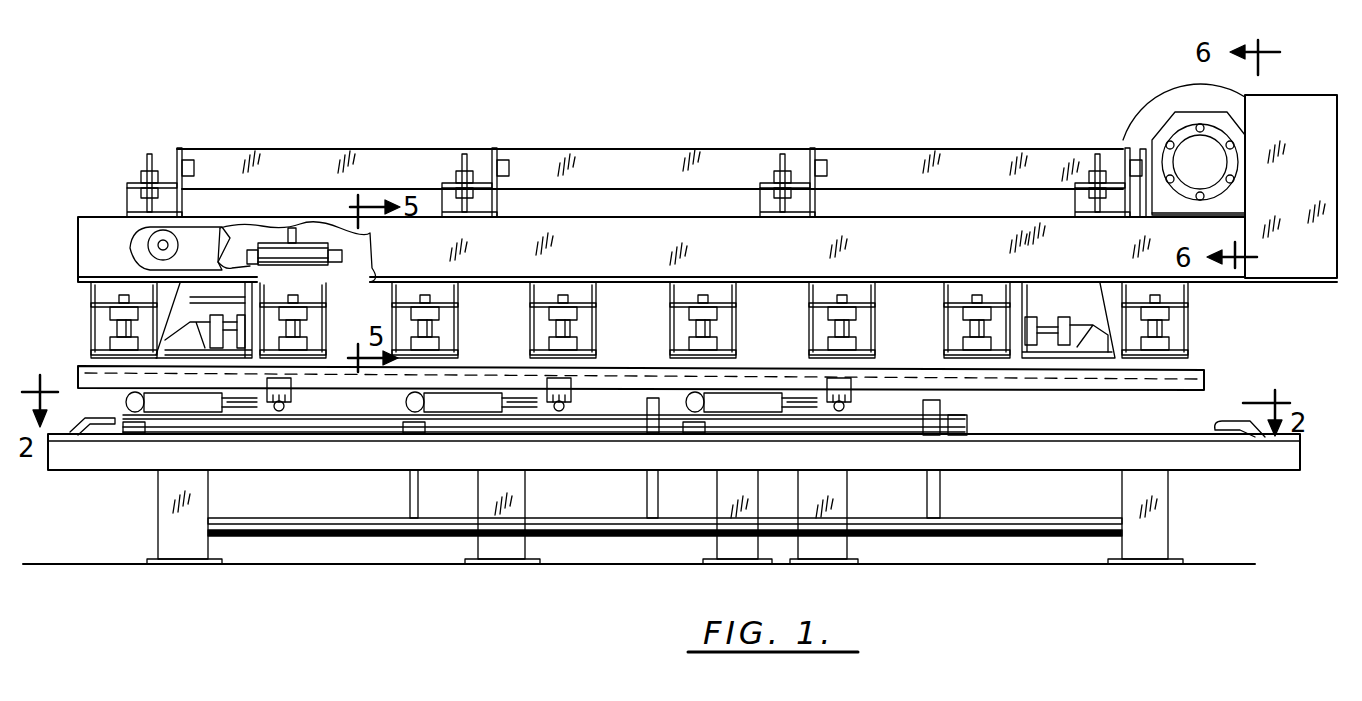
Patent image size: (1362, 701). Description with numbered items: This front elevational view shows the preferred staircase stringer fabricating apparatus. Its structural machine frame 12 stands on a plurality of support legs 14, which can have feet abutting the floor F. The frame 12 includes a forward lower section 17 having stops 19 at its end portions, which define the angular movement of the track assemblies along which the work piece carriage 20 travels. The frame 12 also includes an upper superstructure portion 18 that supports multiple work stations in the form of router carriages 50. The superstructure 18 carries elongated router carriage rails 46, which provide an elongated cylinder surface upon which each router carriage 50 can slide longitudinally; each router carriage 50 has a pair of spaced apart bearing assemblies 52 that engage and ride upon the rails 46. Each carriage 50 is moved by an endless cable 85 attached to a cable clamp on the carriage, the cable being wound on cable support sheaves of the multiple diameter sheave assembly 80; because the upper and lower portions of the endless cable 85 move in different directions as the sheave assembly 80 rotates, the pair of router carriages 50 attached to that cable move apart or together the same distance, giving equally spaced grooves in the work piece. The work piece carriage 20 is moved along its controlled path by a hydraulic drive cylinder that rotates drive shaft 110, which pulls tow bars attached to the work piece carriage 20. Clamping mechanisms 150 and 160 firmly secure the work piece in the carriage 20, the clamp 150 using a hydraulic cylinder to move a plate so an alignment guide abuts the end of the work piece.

The structural machine frame 12 is at (674, 519).
The support legs 14 is at (190, 560).
The forward lower section 17 is at (105, 460).
The upper superstructure portion 18 is at (100, 250).
The stops 19 is at (80, 420).
The work piece carriage 20 is at (78, 368).
The router carriage rails 46 is at (340, 250).
The router carriages 50 is at (470, 342).
The bearing assemblies 52 is at (306, 250).
The multiple diameter sheave assembly 80 is at (1139, 65).
The endless cable 85 is at (220, 228).
The drive shaft 110 is at (262, 528).
The clamping mechanism 150 is at (1170, 331).
The clamping mechanism 160 is at (1047, 327).
The floor F is at (60, 565).